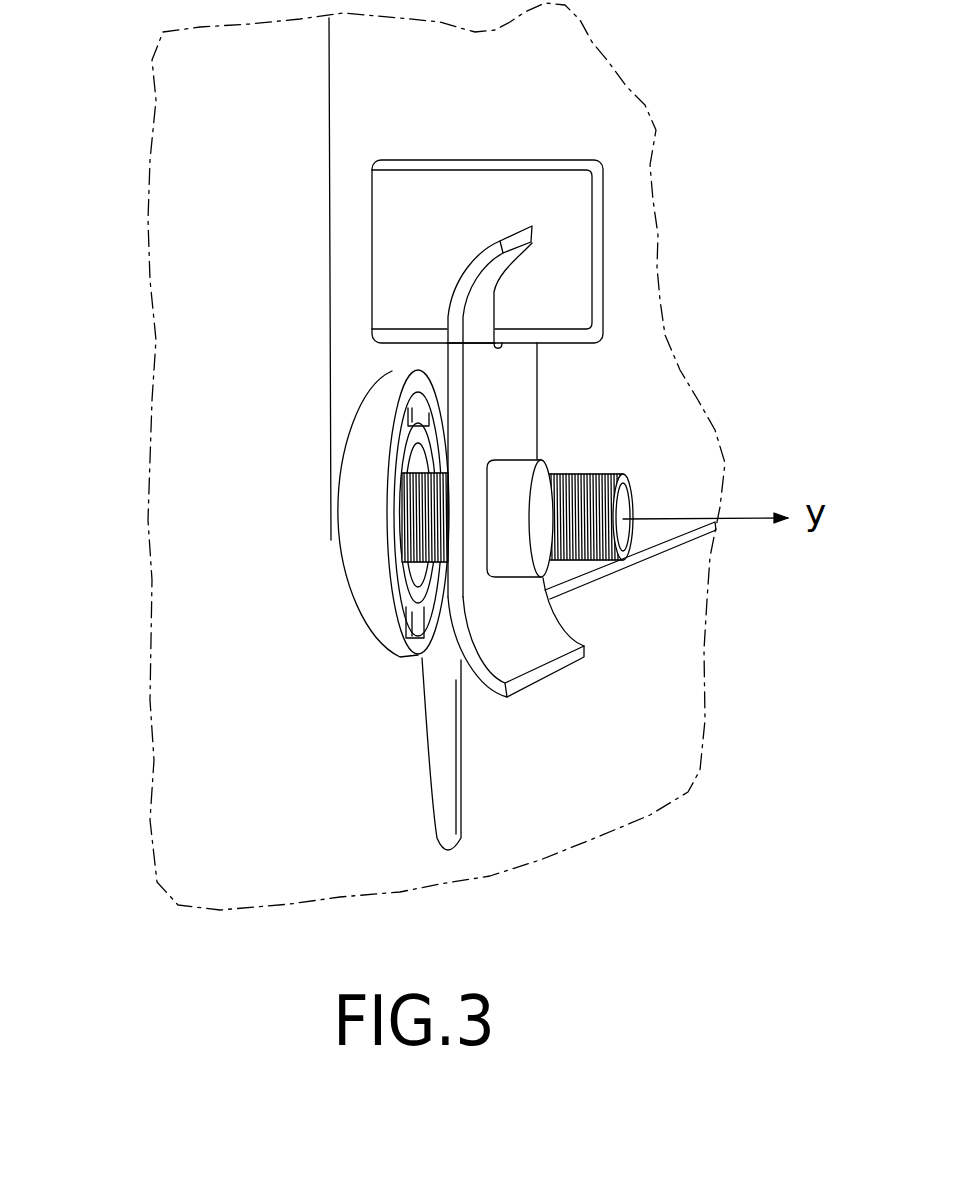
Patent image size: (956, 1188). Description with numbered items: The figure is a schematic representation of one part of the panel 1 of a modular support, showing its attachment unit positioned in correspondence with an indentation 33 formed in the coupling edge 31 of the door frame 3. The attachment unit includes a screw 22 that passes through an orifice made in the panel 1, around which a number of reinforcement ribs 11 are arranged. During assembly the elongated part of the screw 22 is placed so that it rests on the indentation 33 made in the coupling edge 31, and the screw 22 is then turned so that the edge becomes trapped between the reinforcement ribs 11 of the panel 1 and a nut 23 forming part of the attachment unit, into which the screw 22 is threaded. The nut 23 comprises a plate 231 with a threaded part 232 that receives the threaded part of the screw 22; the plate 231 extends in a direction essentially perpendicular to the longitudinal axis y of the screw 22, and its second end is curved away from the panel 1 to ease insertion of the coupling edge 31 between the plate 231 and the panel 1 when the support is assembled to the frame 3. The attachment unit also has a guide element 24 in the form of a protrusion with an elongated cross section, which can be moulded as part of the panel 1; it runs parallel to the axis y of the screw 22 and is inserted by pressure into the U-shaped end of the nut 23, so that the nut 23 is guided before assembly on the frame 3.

The panel 1 is at (600, 138).
The frame 3 is at (245, 278).
The reinforcement ribs 11 is at (368, 445).
The screw 22 is at (605, 462).
The nut 23 is at (500, 410).
The guide element 24 is at (412, 227).
The coupling edge 31 is at (683, 580).
The indentation 33 is at (448, 752).
The plate 231 is at (502, 588).
The threaded part 232 is at (508, 525).